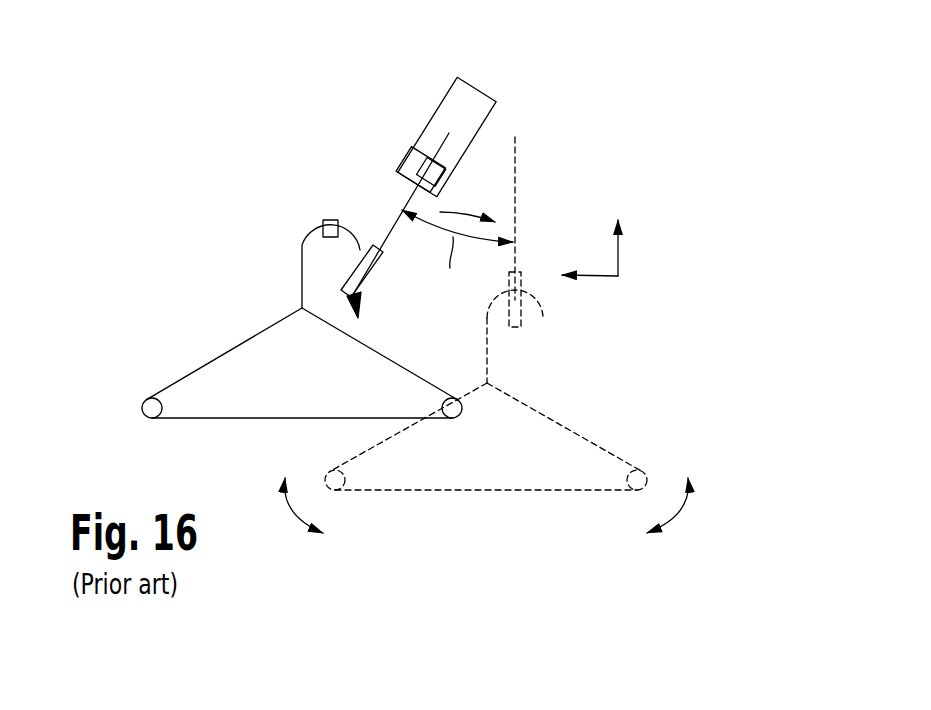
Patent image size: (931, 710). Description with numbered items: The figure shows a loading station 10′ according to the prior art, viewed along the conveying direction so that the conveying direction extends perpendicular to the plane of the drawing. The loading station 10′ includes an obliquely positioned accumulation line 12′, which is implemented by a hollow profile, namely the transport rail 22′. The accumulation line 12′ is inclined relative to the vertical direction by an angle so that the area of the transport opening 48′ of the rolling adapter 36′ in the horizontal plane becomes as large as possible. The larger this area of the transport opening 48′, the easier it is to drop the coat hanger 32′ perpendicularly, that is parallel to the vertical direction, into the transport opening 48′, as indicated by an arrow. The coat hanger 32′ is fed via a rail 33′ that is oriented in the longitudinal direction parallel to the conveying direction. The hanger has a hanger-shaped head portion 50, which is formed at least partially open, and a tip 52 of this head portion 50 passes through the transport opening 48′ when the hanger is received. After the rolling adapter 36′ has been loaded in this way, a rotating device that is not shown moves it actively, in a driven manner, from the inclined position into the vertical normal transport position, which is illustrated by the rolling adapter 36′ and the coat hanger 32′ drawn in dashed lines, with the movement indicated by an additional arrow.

The loading station 10′ is at (310, 137).
The accumulation line 12′ is at (445, 97).
The transport rail 22′ is at (477, 90).
The rolling adapter 36′ is at (441, 147).
The tip 52 is at (363, 233).
The transport opening 48′ is at (368, 272).
The head portion 50 is at (274, 185).
The rail 33′ is at (330, 238).
The coat hanger 32′ is at (205, 333).